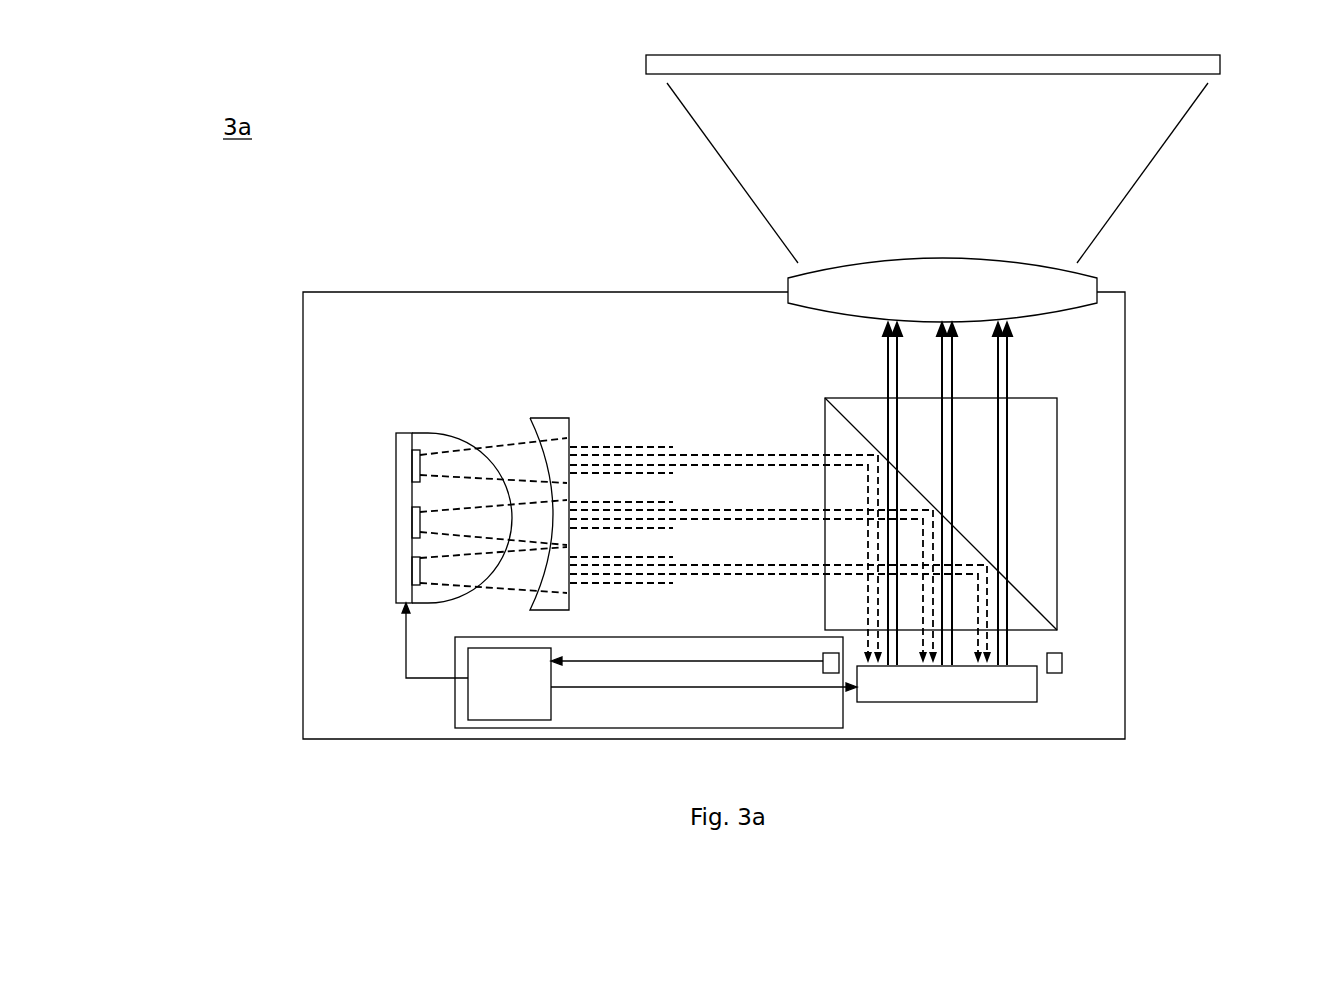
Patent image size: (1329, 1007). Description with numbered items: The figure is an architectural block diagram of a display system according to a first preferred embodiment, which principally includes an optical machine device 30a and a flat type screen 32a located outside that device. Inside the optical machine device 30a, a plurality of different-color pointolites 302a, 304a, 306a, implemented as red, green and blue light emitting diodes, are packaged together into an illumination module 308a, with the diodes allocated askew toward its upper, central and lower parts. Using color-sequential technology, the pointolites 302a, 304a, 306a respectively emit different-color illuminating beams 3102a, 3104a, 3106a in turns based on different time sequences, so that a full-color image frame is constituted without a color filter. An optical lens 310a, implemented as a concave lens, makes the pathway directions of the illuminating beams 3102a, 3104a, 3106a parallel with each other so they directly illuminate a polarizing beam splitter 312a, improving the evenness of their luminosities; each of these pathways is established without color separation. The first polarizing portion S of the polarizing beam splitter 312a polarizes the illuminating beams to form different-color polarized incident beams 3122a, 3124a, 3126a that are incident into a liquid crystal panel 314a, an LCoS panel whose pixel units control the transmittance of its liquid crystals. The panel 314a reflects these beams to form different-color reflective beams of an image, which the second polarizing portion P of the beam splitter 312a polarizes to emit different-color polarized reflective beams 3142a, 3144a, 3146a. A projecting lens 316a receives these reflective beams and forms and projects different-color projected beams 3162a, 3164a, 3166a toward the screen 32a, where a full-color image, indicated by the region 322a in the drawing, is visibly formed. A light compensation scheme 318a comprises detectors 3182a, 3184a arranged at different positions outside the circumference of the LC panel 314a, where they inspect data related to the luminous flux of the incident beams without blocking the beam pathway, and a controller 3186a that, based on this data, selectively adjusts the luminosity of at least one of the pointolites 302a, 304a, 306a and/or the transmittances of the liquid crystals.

The optical machine device 30a is at (300, 327).
The flat type screen 32a is at (1168, 75).
The projected image 322a is at (742, 73).
The different-color projected beam 3162a is at (1100, 153).
The different-color projected beam 3164a is at (1100, 182).
The different-color projected beam 3166a is at (1085, 207).
The projecting lens 316a is at (1085, 290).
The different-color polarized reflective beam 3142a is at (900, 343).
The different-color polarized reflective beam 3144a is at (948, 358).
The different-color polarized reflective beam 3146a is at (1005, 385).
The polarizing beam splitter 312a is at (1050, 470).
The liquid crystal panel 314a is at (1040, 702).
The different-color polarized incident beam 3122a is at (872, 666).
The different-color polarized incident beam 3124a is at (927, 667).
The different-color polarized incident beam 3126a is at (990, 667).
The detector 3182a is at (832, 673).
The detector 3184a is at (1065, 664).
The light compensation scheme 318a is at (650, 730).
The controller 3186a is at (530, 713).
The illumination module 308a is at (218, 467).
The different-color pointolite 302a is at (411, 466).
The different-color pointolite 304a is at (411, 522).
The different-color pointolite 306a is at (411, 572).
The optical lens 310a is at (542, 418).
The different-color illuminating beam 3102a is at (600, 465).
The different-color illuminating beam 3104a is at (702, 506).
The different-color illuminating beam 3106a is at (770, 563).